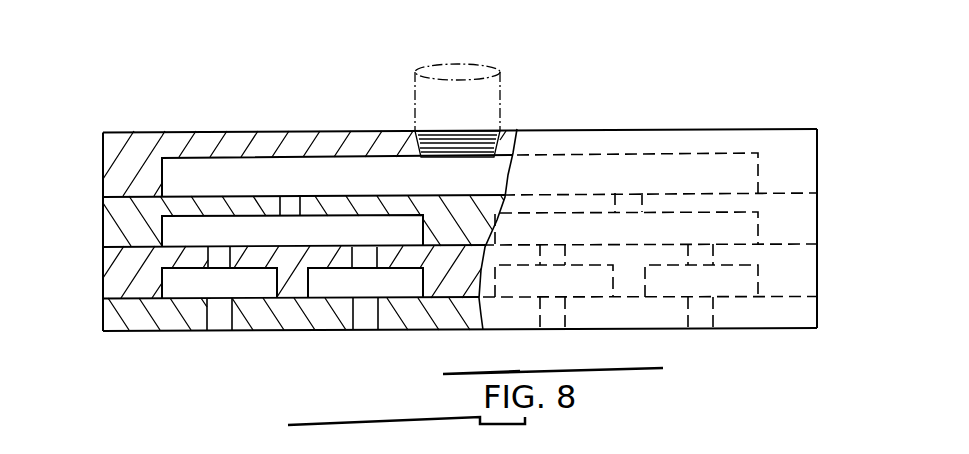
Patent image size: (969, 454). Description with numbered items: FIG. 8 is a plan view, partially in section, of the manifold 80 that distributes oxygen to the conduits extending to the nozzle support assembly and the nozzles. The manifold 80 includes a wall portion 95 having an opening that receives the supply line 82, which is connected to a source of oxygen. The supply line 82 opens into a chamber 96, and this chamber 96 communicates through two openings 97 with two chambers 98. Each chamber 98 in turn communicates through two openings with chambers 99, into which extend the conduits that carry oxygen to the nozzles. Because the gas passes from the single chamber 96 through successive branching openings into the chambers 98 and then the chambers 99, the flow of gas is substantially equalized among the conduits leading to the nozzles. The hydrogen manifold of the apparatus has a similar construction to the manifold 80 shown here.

The manifold 80 is at (724, 124).
The supply line 82 is at (500, 90).
The wall portion 95 is at (328, 132).
The chamber 96 is at (226, 166).
The openings 97 is at (297, 212).
The chambers 98 is at (105, 297).
The chambers 99 is at (190, 292).